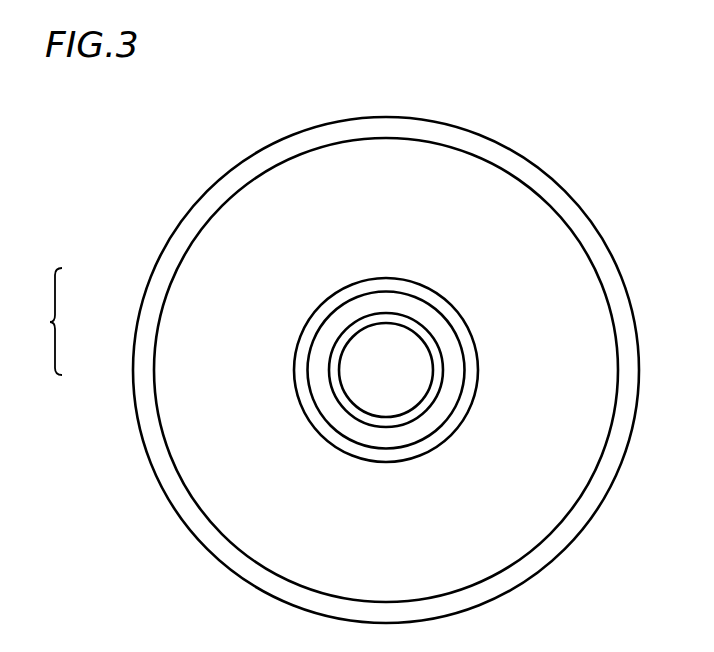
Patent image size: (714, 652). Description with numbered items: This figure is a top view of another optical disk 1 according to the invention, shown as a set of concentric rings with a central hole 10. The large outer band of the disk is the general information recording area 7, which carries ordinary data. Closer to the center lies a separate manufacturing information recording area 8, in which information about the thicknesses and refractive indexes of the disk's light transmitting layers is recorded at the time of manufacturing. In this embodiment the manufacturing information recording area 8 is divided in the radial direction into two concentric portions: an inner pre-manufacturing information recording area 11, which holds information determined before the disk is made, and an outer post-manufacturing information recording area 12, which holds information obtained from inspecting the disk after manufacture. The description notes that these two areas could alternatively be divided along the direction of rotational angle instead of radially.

The optical disk 1 is at (410, 128).
The general information recording area 7 is at (448, 190).
The manufacturing information recording area 8 is at (46, 321).
The center hole 10 is at (387, 345).
The pre-manufacturing information recording area 11 is at (322, 382).
The post-manufacturing information recording area 12 is at (307, 340).